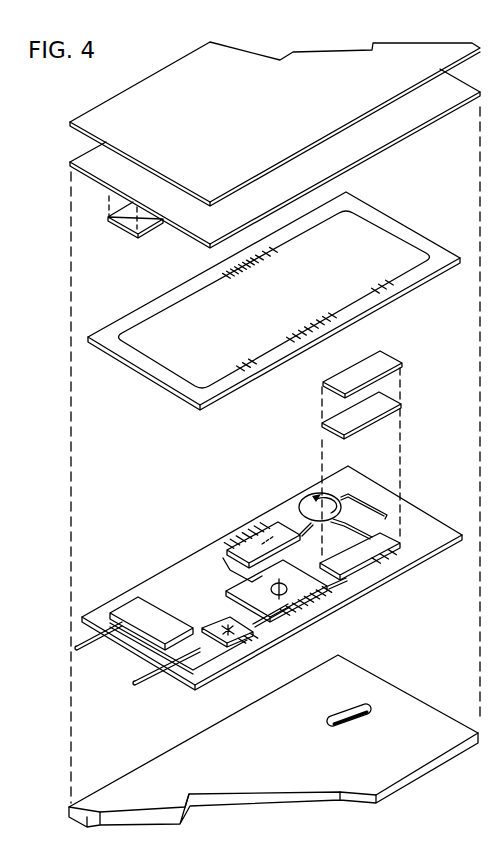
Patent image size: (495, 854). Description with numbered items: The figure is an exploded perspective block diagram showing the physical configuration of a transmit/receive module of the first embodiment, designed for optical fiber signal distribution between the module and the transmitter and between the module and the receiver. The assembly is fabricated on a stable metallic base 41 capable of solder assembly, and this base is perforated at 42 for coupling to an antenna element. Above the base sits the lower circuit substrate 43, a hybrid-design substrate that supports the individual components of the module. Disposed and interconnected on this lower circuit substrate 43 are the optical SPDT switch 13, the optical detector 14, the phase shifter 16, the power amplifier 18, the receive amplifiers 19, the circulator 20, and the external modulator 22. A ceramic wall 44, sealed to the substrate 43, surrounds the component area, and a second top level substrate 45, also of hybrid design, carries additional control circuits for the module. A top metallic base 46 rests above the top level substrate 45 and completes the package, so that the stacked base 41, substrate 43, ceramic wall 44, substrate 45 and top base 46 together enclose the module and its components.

The optical SPDT switch 13 is at (217, 660).
The optical detector 14 is at (253, 630).
The phase shifter 16 is at (332, 589).
The power amplifier 18 is at (392, 353).
The receive amplifiers 19 is at (272, 528).
The circulator 20 is at (312, 498).
The external modulator 22 is at (131, 600).
The metallic base 41 is at (422, 783).
The perforation 42 is at (362, 712).
The lower circuit substrate 43 is at (196, 509).
The ceramic wall 44 is at (139, 378).
The top level substrate 45 is at (79, 155).
The top metallic base 46 is at (87, 107).